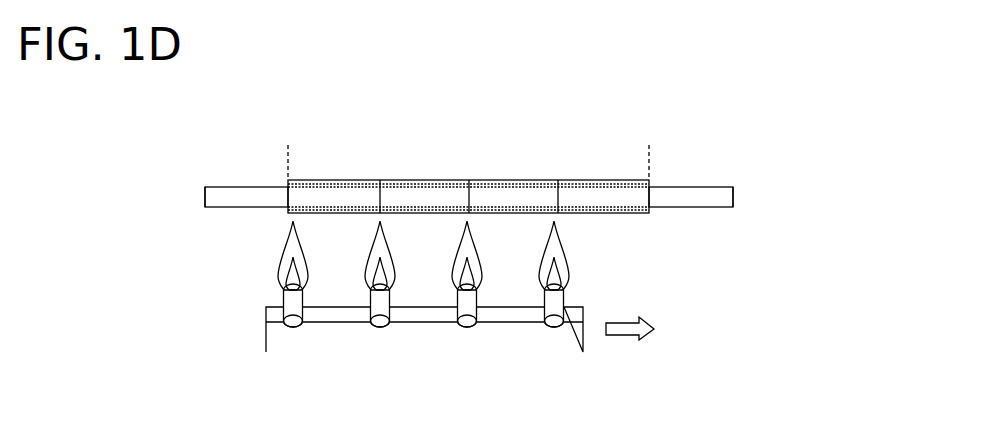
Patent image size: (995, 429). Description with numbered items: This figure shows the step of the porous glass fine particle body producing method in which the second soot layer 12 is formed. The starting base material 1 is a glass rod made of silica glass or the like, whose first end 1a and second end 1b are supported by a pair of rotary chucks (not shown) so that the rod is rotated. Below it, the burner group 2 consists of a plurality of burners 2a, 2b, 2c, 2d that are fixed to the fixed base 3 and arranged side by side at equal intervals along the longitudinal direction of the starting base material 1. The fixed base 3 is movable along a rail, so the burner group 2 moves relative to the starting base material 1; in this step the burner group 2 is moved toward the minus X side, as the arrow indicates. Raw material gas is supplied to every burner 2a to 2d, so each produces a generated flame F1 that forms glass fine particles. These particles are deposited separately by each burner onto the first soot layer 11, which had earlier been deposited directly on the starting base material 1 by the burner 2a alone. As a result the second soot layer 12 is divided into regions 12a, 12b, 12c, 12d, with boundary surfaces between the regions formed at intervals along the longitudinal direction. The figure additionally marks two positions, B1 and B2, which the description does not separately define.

The starting base material 1 is at (469, 181).
The first end 1a is at (205, 196).
The second end 1b is at (735, 197).
The first soot layer 11 is at (289, 212).
The second soot layer 12 is at (422, 160).
The region 12a is at (583, 180).
The region 12b is at (500, 180).
The region 12c is at (418, 180).
The region 12d is at (338, 180).
The first boundary position B1 is at (287, 148).
The second boundary position B2 is at (648, 148).
The burner group 2 is at (404, 307).
The burner 2a is at (548, 300).
The burner 2b is at (461, 300).
The burner 2c is at (374, 300).
The burner 2d is at (287, 300).
The generated flame F1 is at (307, 272).
The fixed base 3 is at (565, 347).